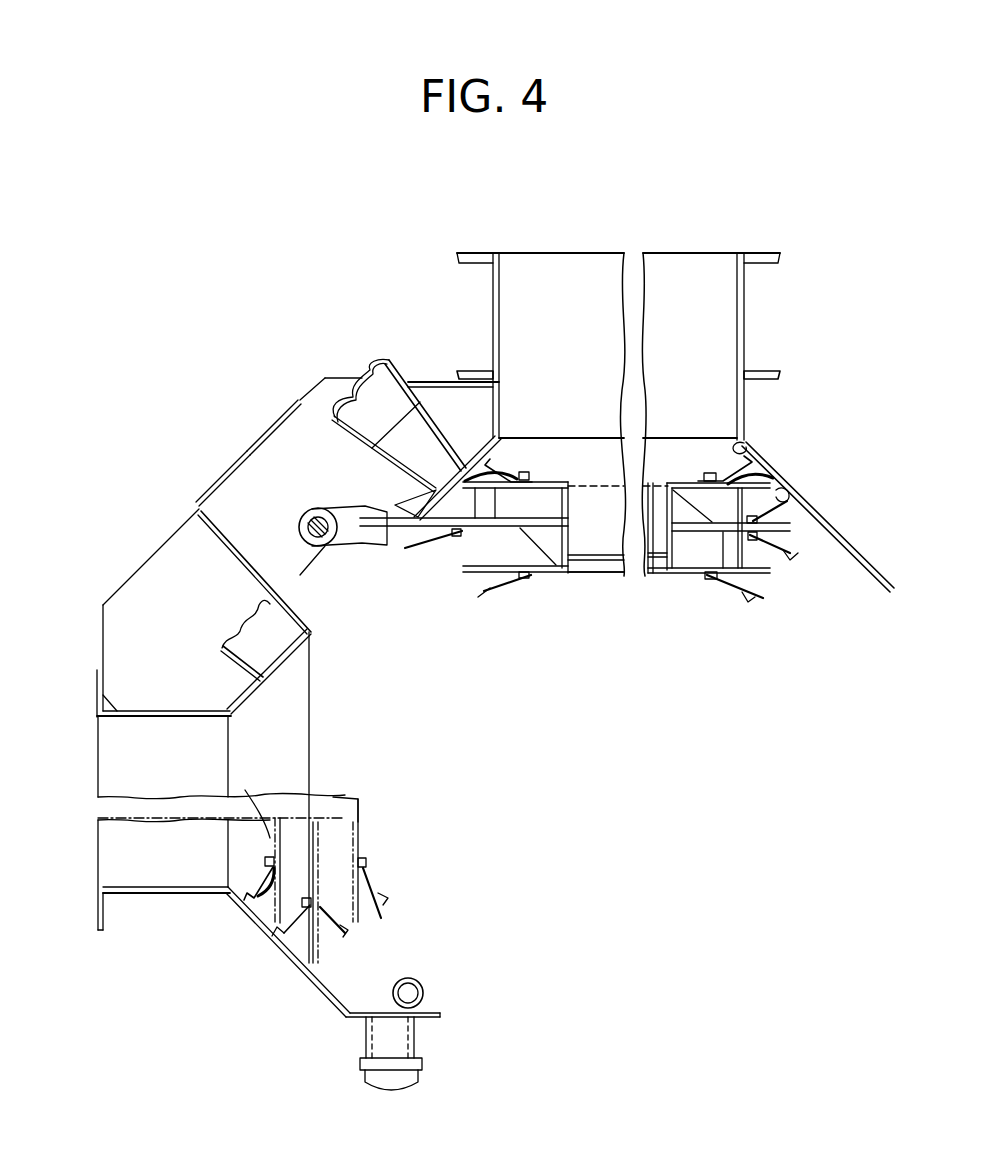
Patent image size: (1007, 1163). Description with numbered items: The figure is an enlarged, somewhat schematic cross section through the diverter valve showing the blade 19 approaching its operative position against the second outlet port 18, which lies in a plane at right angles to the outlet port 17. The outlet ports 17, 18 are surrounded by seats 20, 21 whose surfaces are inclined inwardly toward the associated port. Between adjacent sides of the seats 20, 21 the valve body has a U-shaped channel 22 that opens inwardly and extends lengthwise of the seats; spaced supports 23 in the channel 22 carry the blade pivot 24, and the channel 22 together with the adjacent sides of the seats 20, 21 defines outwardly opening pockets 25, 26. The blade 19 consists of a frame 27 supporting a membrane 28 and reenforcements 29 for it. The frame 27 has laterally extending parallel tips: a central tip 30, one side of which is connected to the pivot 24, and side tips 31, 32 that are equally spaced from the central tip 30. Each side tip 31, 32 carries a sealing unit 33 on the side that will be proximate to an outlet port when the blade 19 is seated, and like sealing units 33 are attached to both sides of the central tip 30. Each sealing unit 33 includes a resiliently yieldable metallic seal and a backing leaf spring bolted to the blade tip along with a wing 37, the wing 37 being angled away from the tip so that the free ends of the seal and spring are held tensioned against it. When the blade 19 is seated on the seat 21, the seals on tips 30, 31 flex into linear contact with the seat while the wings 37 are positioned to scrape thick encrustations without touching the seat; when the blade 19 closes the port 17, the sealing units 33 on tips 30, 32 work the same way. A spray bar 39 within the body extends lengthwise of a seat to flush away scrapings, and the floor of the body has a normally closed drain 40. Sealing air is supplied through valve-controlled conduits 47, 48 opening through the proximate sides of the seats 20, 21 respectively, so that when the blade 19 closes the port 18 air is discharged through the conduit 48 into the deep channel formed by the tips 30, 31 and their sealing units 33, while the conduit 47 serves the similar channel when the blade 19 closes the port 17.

The outlet port 17 is at (118, 862).
The second outlet port 18 is at (725, 325).
The blade 19 is at (622, 579).
The seat 20 is at (240, 838).
The seat 21 is at (745, 452).
The U-shaped channel 22 is at (270, 447).
The supports 23 is at (233, 497).
The blade pivot 24 is at (344, 548).
The pocket 25 is at (143, 595).
The pocket 26 is at (440, 395).
The frame 27 is at (573, 507).
The membrane 28 is at (586, 566).
The reenforcements 29 is at (655, 487).
The central tip 30 is at (808, 537).
The side tip 31 is at (683, 487).
The side tip 32 is at (690, 573).
The sealing unit 33 is at (497, 467).
The wing 37 is at (748, 602).
The spray bar 39 is at (424, 990).
The drain 40 is at (421, 1070).
The conduit 47 is at (250, 648).
The conduit 48 is at (372, 380).